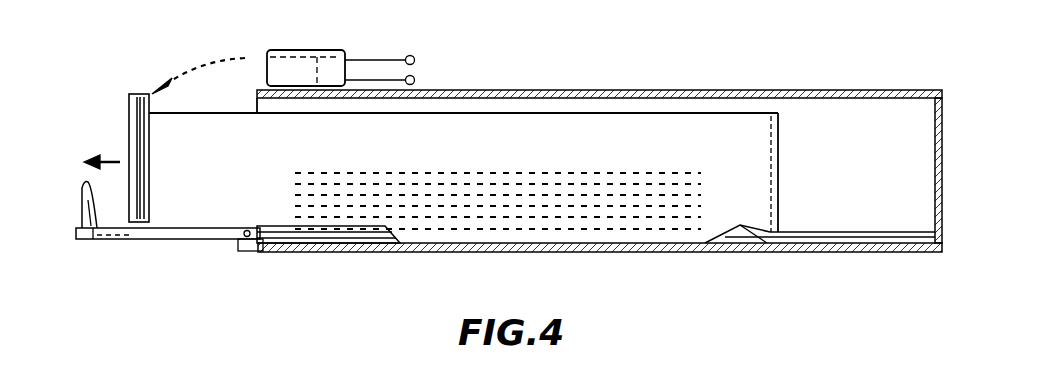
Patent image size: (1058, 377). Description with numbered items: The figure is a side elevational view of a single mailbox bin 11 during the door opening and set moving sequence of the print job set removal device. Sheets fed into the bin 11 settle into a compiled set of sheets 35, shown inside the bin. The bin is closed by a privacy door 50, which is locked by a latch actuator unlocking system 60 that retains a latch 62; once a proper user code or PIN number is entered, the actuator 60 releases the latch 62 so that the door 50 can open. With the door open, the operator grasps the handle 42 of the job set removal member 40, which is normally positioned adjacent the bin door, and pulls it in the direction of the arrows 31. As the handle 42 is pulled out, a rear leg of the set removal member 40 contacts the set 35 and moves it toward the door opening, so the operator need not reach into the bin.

The mailbox bin 11 is at (813, 252).
The arrows 31 is at (106, 155).
The compiled set of sheets 35 is at (673, 185).
The job set removal member 40 is at (755, 125).
The handle 42 is at (138, 92).
The privacy door 50 is at (190, 240).
The latch actuator unlocking system 60 is at (343, 58).
The latch 62 is at (88, 228).